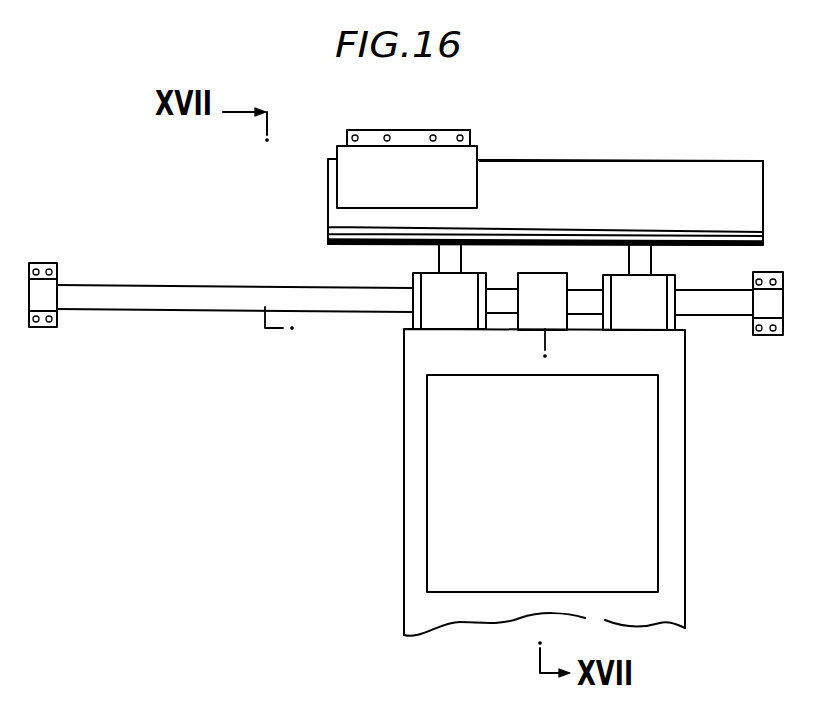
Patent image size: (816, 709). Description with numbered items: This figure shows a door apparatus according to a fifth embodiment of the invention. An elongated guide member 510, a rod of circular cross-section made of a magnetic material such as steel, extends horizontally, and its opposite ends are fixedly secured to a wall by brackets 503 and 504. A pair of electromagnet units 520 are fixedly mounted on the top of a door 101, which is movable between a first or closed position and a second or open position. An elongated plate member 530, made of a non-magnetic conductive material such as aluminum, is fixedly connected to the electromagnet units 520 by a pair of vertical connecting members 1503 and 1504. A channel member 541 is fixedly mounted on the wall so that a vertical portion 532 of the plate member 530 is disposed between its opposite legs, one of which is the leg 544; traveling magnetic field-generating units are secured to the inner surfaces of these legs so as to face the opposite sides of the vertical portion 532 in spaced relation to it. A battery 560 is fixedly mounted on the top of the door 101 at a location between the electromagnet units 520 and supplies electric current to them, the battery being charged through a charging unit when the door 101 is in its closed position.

The door 101 is at (686, 523).
The bracket 503 is at (433, 255).
The bracket 504 is at (657, 257).
The guide member 510 is at (192, 283).
The electromagnet units 520 is at (474, 266).
The plate member 530 is at (607, 158).
The vertical portion 532 is at (673, 170).
The channel member 541 is at (487, 146).
The leg 544 is at (478, 190).
The battery 560 is at (553, 274).
The vertical connecting member 1503 is at (58, 283).
The vertical connecting member 1504 is at (762, 310).